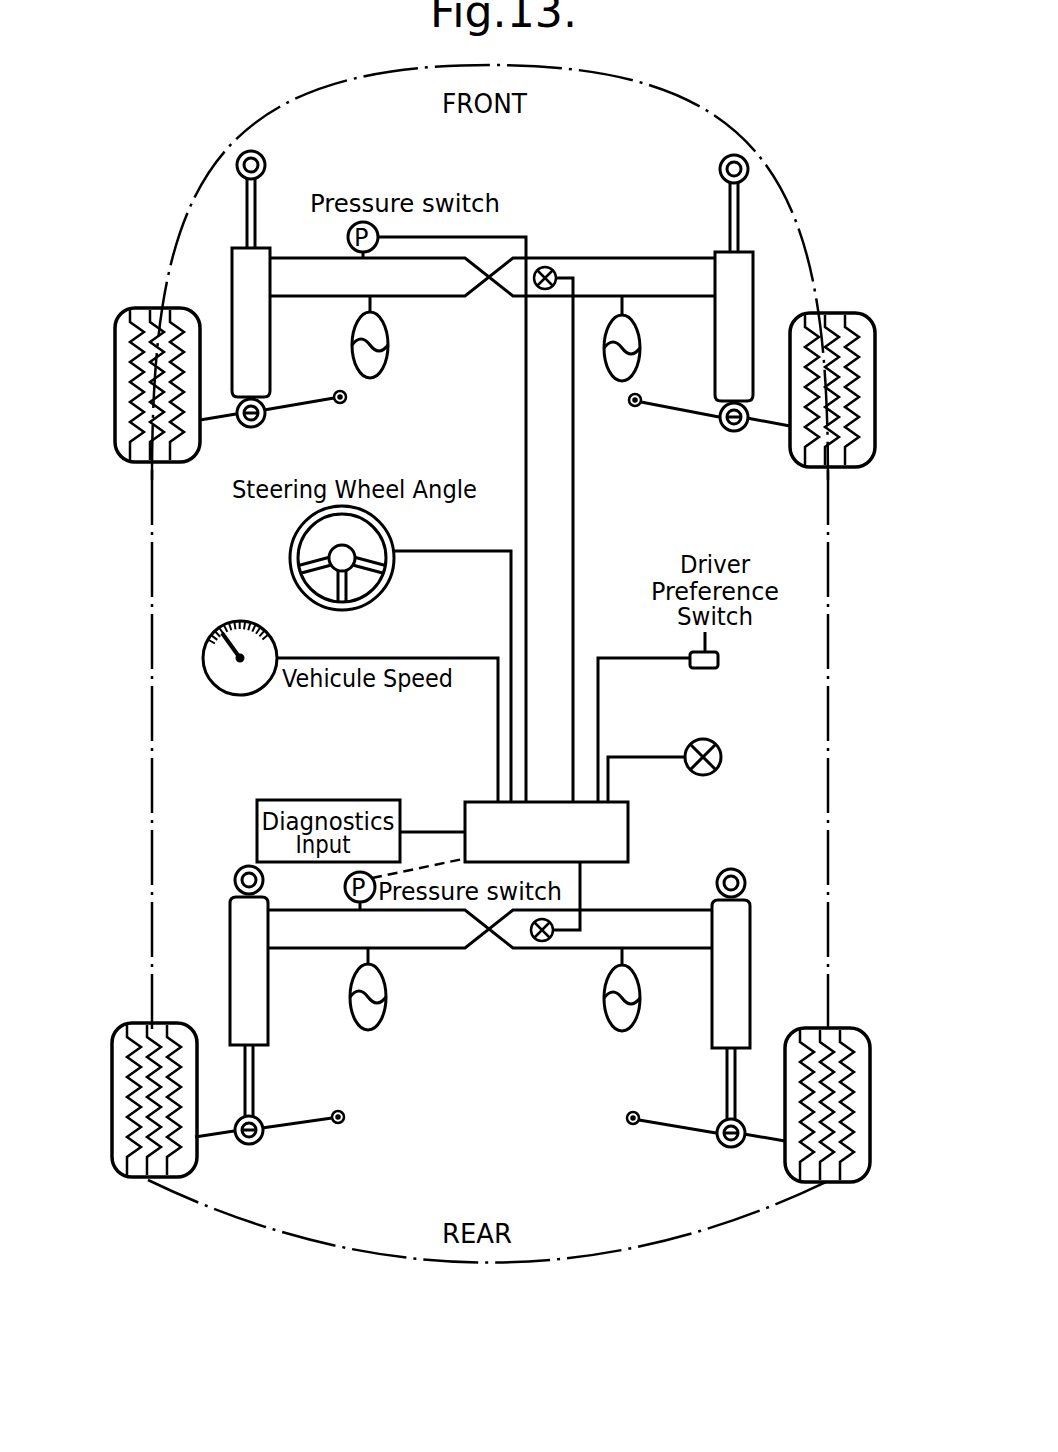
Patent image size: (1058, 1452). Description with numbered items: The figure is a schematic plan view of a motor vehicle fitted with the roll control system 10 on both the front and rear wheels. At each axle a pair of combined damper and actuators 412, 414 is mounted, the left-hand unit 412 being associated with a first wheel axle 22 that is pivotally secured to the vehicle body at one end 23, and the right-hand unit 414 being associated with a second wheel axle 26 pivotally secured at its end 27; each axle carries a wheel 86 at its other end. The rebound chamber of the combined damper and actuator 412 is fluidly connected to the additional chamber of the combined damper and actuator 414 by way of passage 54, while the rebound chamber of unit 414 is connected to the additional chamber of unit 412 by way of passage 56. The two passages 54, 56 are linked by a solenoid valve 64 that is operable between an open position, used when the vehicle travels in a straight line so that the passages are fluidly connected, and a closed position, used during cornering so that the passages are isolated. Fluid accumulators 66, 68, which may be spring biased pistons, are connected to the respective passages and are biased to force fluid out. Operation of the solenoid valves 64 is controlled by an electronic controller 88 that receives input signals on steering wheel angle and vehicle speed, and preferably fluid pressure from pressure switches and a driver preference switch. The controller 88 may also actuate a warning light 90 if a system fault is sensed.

The roll control system 10 is at (680, 143).
The first wheel axle 22 is at (300, 412).
The pivot end of first wheel axle 23 is at (346, 402).
The second wheel axle 26 is at (700, 416).
The pivot end of second wheel axle 27 is at (629, 406).
The passage 54 is at (305, 257).
The passage 56 is at (667, 258).
The solenoid valve 64 is at (554, 270).
The fluid accumulator 66 is at (640, 352).
The fluid accumulator 68 is at (388, 350).
The wheel 86 is at (115, 370).
The electronic controller 88 is at (579, 832).
The warning light 90 is at (716, 770).
The combined damper and actuator 412 is at (218, 272).
The combined damper and actuator 414 is at (762, 268).